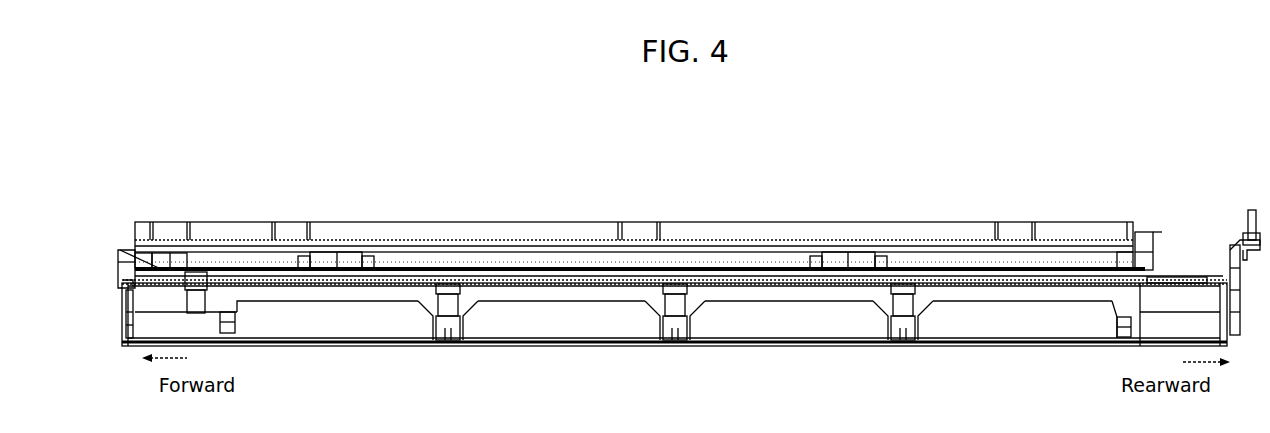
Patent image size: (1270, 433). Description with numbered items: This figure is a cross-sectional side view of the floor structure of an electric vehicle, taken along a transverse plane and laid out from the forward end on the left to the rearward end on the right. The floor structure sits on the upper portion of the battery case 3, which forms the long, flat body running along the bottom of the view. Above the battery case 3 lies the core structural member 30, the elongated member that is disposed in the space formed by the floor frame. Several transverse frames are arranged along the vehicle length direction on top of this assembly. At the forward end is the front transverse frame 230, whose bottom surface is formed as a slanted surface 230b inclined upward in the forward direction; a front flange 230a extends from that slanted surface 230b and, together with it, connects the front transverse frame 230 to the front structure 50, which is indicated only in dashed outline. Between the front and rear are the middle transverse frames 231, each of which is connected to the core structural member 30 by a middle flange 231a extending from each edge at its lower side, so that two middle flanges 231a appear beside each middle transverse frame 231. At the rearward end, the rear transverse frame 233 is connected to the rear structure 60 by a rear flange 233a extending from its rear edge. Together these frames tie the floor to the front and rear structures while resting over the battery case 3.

The battery case 3 is at (419, 350).
The core structural member 30 is at (558, 262).
The front structure 50 is at (118, 250).
The rear structure 60 is at (1180, 233).
The front transverse frame 230 is at (178, 246).
The front flange 230a is at (121, 250).
The slanted surface 230b is at (120, 262).
The middle transverse frame 231 is at (344, 246).
The middle flange 231a is at (297, 270).
The rear transverse frame 233 is at (1141, 222).
The rear flange 233a is at (1160, 232).